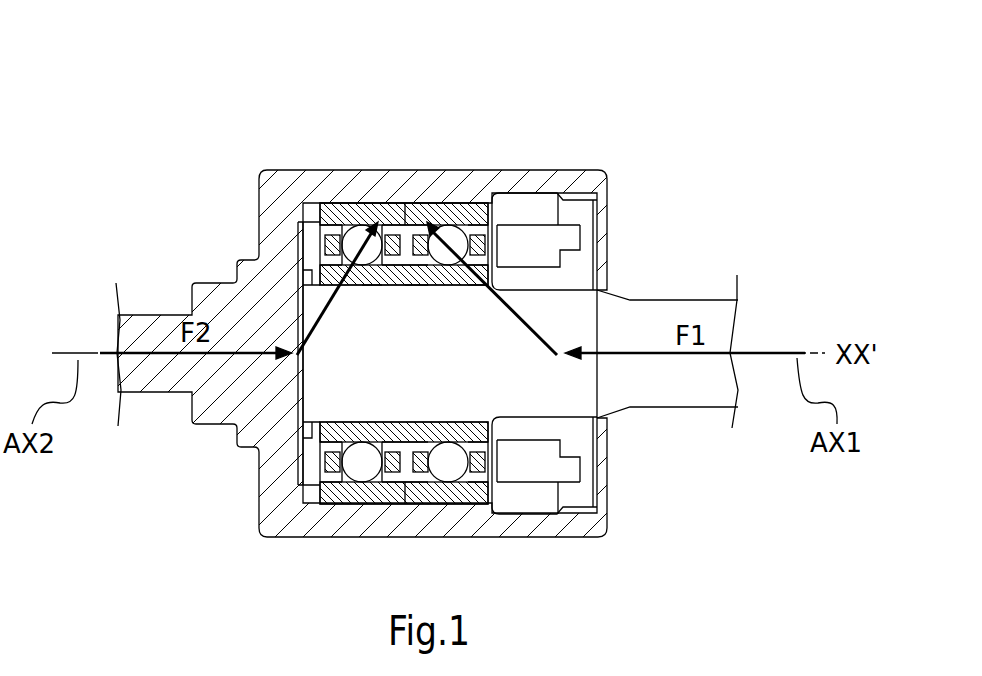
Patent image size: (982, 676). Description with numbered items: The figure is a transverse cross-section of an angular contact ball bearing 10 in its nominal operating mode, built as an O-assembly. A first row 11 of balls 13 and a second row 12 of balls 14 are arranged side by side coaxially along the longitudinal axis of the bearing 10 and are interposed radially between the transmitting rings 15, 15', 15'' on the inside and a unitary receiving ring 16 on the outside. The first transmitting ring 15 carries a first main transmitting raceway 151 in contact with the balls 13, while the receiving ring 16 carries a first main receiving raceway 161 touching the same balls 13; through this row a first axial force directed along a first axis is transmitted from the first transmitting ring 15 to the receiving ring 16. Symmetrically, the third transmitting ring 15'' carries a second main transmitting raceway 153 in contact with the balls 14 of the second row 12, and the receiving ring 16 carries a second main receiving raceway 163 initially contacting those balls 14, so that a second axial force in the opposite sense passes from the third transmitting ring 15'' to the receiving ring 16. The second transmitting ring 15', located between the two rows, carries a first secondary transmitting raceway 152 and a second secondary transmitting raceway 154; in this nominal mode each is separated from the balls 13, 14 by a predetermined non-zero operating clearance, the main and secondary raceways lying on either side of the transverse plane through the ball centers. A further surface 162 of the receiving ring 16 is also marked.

The angular contact ball bearing 10 is at (485, 187).
The first row of balls 11 is at (461, 216).
The second row of balls 12 is at (350, 206).
The balls 13 is at (447, 226).
The balls 14 is at (325, 180).
The first transmitting ring 15 is at (406, 353).
The first main transmitting raceway 151 is at (477, 288).
The first secondary transmitting raceway 152 is at (420, 287).
The second main transmitting raceway 153 is at (318, 292).
The second secondary transmitting raceway 154 is at (380, 287).
The second transmitting ring 15' is at (354, 370).
The third transmitting ring 15'' is at (271, 266).
The receiving ring 16 is at (537, 200).
The first main receiving raceway 161 is at (440, 222).
The sleeve second portion 162 is at (505, 193).
The second main receiving raceway 163 is at (365, 225).